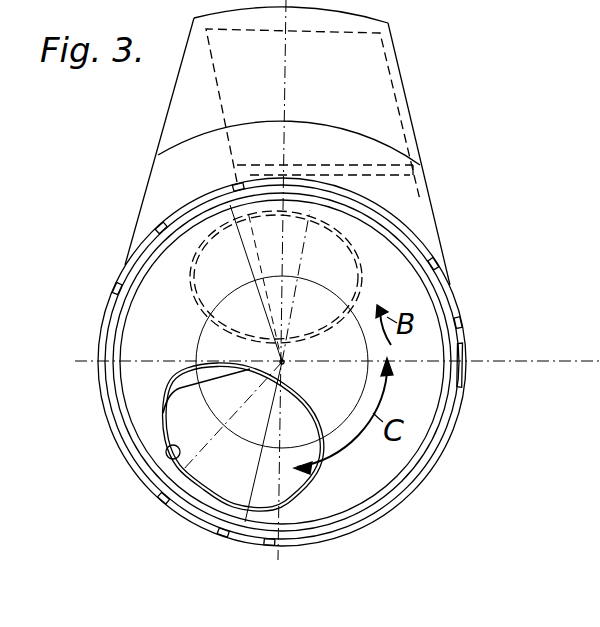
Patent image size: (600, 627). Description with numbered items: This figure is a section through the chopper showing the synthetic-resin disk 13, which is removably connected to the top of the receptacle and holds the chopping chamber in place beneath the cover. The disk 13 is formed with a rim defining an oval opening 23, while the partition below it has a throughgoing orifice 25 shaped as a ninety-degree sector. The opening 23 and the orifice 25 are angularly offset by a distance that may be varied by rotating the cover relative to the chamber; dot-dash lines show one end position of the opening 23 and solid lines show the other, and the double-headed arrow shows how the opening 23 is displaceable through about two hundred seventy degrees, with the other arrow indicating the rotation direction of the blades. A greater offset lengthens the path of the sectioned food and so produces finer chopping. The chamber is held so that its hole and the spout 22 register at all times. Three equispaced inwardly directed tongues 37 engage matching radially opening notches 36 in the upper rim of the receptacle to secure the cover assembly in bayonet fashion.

The synthetic-resin disk 13 is at (428, 341).
The spout 22 is at (408, 99).
The oval opening 23 is at (345, 264).
The throughgoing orifice 25 is at (165, 412).
The radially opening notches 36 is at (118, 286).
The inwardly directed tongues 37 is at (197, 520).